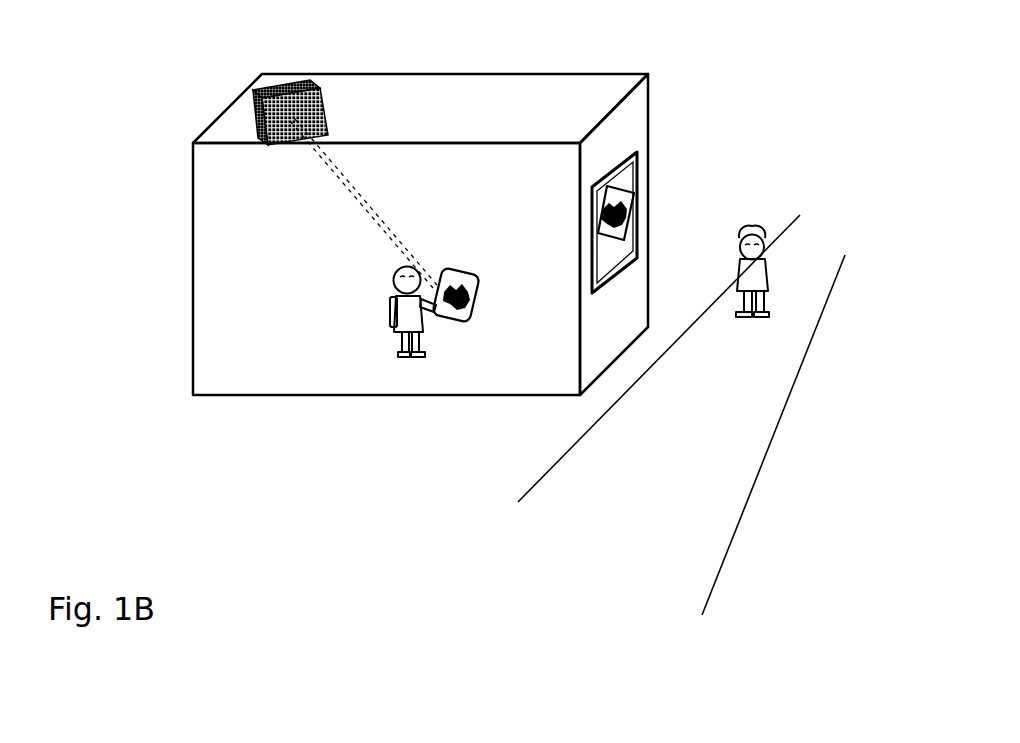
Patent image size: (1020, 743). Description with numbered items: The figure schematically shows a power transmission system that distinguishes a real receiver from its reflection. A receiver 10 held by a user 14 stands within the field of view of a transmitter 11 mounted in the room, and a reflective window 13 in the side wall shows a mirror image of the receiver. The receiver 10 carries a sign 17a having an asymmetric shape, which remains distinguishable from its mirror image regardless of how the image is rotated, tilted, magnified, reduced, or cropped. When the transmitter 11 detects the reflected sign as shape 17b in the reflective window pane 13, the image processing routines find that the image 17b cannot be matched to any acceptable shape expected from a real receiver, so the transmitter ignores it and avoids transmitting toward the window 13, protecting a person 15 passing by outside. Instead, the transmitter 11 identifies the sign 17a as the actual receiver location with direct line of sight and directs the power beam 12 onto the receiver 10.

The receiver 10 is at (470, 321).
The transmitter 11 is at (305, 110).
The power beam 12 is at (380, 227).
The window 13 is at (623, 250).
The user 14 is at (390, 307).
The person passing by 15 is at (768, 269).
The sign 17a is at (474, 288).
The reflected image of the sign 17b is at (627, 187).